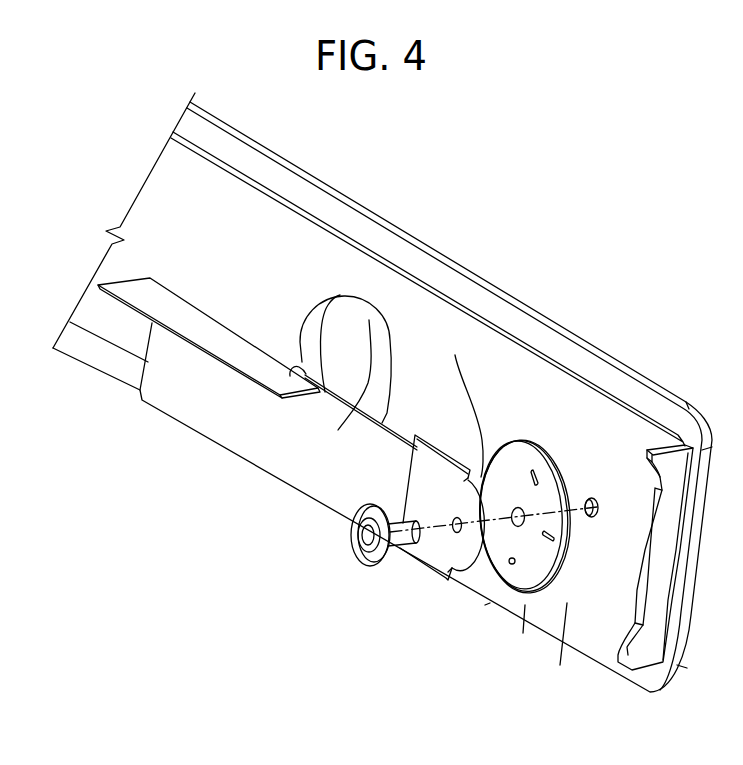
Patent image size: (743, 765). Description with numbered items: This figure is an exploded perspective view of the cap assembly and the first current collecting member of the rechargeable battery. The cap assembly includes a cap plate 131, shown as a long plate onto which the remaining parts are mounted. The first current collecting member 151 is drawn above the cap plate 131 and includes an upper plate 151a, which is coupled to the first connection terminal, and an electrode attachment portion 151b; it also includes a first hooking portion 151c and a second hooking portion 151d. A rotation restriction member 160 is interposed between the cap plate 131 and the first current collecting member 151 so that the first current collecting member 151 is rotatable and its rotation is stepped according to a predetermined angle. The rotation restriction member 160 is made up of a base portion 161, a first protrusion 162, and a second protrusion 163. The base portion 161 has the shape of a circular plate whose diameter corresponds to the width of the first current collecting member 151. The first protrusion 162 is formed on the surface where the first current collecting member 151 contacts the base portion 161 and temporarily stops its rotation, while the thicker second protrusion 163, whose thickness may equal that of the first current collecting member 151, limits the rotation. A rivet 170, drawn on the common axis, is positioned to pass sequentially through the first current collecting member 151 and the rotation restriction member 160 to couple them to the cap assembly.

The cap plate 131 is at (557, 413).
The first current collecting member 151 is at (322, 131).
The upper plate 151a is at (369, 320).
The electrode attachment portion 151b is at (197, 328).
The first hooking portion 151c is at (455, 355).
The second hooking portion 151d is at (447, 583).
The rotation restriction member 160 is at (564, 522).
The base portion 161 is at (533, 563).
The first protrusion 162 is at (550, 537).
The second protrusion 163 is at (510, 564).
The rivet 170 is at (363, 558).